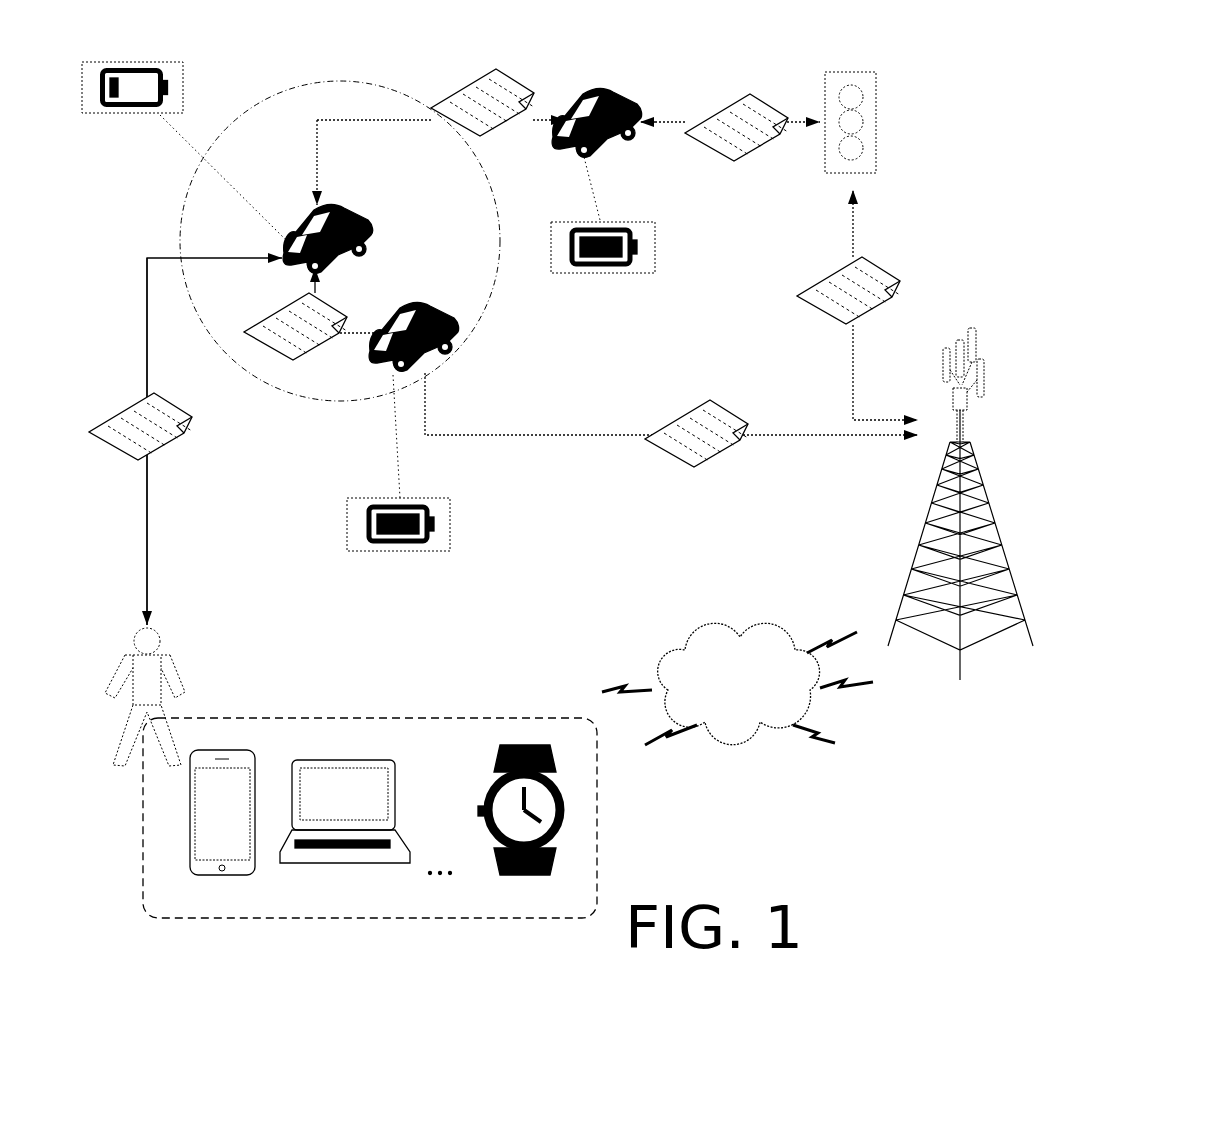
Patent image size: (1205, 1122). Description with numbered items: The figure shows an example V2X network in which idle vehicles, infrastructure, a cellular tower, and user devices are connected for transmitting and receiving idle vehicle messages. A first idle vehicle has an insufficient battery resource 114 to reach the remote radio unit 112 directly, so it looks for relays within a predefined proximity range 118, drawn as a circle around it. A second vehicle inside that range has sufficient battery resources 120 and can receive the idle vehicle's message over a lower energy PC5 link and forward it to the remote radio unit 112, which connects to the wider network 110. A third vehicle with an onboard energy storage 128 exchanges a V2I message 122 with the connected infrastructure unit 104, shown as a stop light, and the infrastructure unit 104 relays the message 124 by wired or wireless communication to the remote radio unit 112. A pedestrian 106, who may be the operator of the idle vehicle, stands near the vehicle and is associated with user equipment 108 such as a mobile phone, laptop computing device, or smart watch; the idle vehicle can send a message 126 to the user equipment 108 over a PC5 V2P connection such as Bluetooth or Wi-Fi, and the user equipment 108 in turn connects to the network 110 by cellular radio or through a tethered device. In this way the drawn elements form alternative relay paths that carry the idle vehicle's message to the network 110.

The infrastructure unit 104 is at (875, 118).
The pedestrian 106 is at (165, 665).
The user equipment 108 is at (470, 742).
The network 110 is at (757, 699).
The remote radio unit 112 is at (980, 355).
The battery resource 114 is at (138, 75).
The predefined proximity range 118 is at (188, 200).
The battery resources 120 is at (438, 547).
The message 122 is at (752, 97).
The message 124 is at (873, 272).
The message 126 is at (145, 440).
The onboard energy storage 128 is at (484, 95).